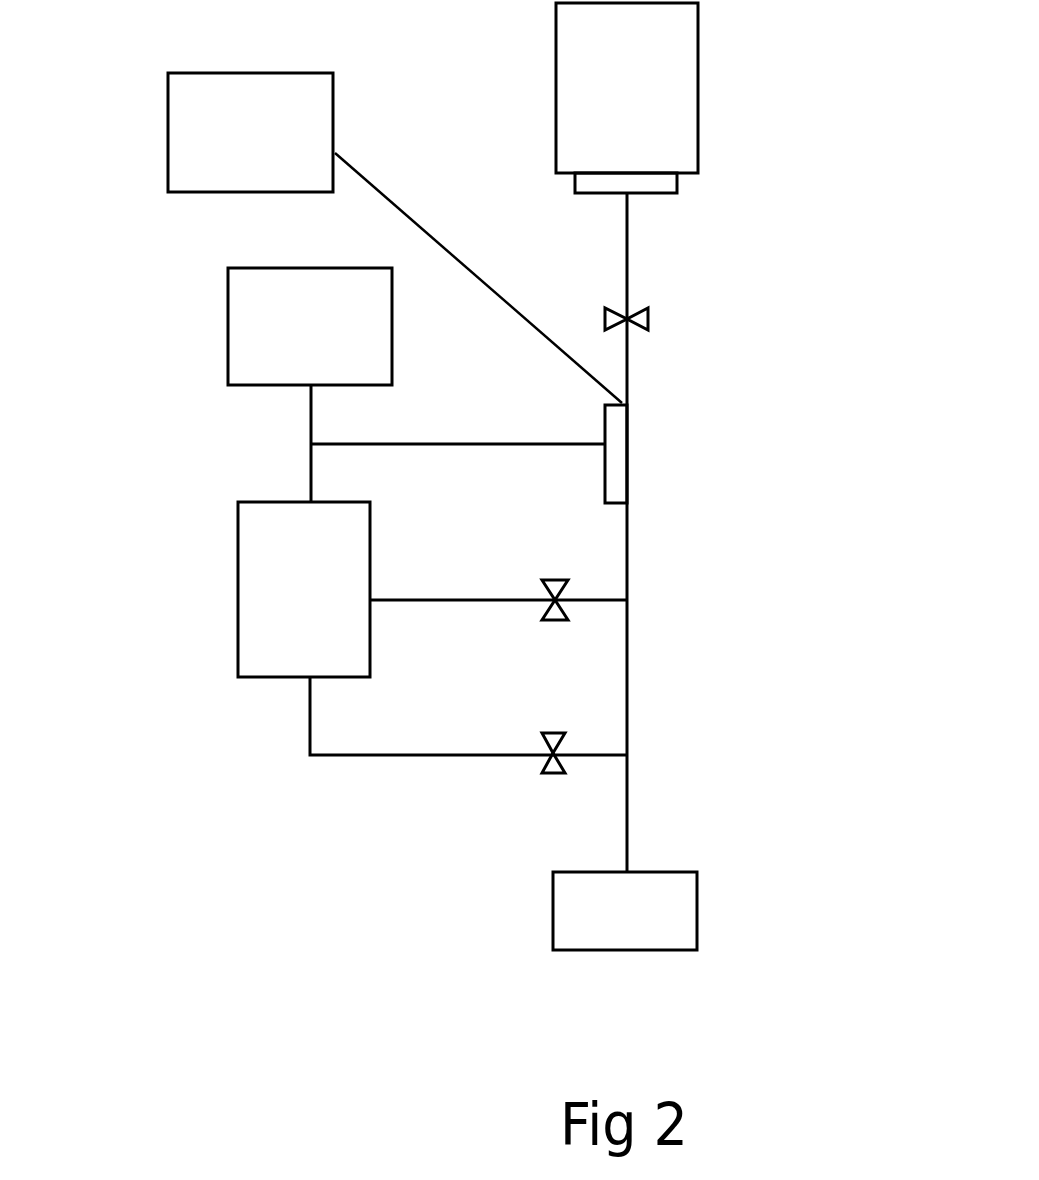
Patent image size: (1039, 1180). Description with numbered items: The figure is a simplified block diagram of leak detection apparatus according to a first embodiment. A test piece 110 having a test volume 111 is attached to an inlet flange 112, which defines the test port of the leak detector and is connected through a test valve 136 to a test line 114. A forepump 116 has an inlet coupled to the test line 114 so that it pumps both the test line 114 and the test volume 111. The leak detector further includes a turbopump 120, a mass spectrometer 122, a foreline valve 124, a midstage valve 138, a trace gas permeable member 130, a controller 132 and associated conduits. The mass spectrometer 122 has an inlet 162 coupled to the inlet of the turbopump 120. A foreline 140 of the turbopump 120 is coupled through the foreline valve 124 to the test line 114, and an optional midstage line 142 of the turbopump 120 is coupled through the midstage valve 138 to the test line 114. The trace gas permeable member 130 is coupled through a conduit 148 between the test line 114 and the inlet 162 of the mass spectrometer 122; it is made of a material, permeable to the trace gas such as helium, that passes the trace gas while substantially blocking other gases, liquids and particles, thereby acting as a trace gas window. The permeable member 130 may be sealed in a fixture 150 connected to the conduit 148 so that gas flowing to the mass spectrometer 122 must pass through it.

The test piece 110 is at (558, 88).
The test volume 111 is at (629, 94).
The inlet flange 112 is at (684, 193).
The test line 114 is at (679, 532).
The forepump 116 is at (740, 924).
The turbopump 120 is at (242, 619).
The mass spectrometer 122 is at (245, 356).
The foreline valve 124 is at (567, 802).
The trace gas permeable member 130 is at (680, 454).
The controller 132 is at (179, 161).
The test valve 136 is at (590, 282).
The midstage valve 138 is at (531, 559).
The foreline 140 is at (468, 765).
The midstage line 142 is at (498, 649).
The conduit 148 is at (458, 494).
The fixture 150 is at (478, 280).
The inlet 162 is at (254, 443).